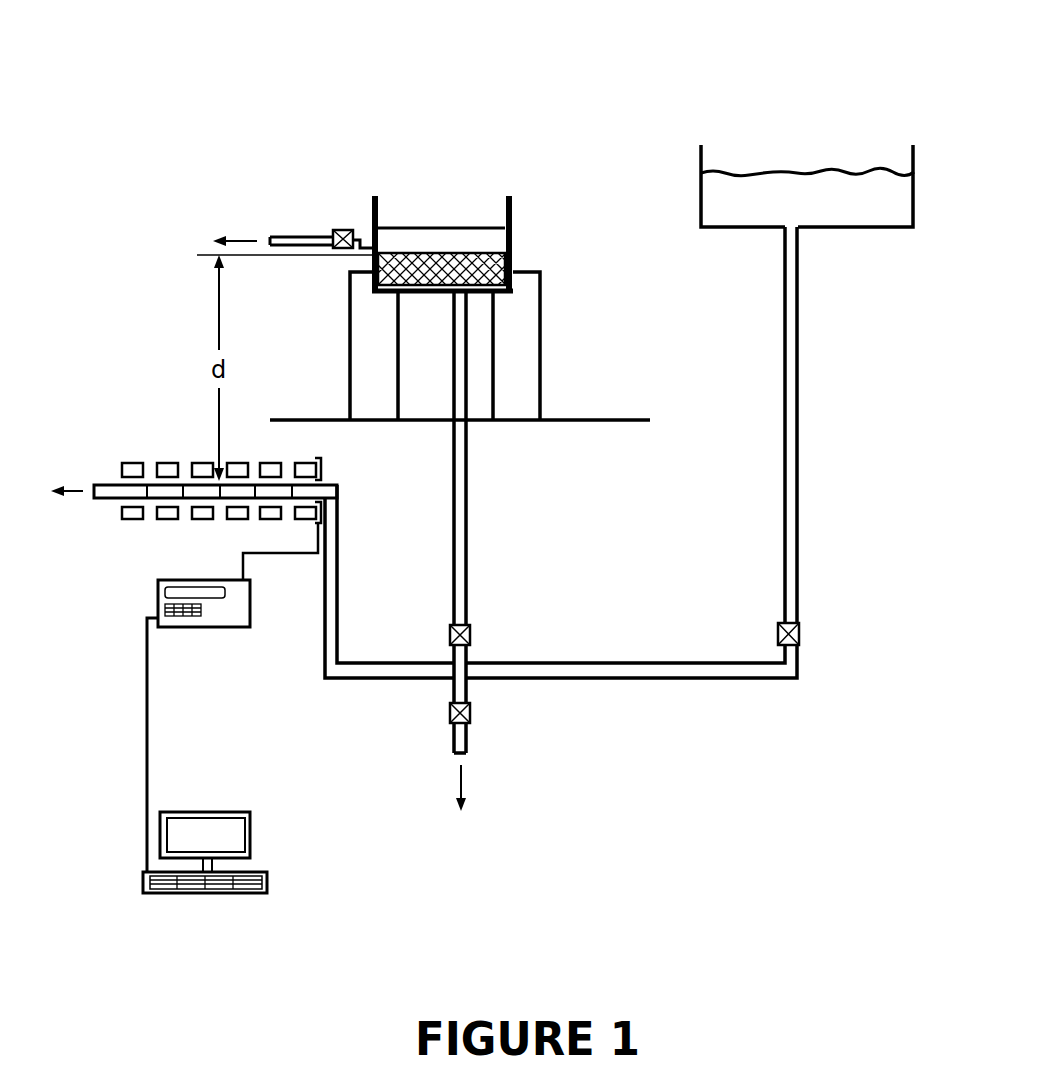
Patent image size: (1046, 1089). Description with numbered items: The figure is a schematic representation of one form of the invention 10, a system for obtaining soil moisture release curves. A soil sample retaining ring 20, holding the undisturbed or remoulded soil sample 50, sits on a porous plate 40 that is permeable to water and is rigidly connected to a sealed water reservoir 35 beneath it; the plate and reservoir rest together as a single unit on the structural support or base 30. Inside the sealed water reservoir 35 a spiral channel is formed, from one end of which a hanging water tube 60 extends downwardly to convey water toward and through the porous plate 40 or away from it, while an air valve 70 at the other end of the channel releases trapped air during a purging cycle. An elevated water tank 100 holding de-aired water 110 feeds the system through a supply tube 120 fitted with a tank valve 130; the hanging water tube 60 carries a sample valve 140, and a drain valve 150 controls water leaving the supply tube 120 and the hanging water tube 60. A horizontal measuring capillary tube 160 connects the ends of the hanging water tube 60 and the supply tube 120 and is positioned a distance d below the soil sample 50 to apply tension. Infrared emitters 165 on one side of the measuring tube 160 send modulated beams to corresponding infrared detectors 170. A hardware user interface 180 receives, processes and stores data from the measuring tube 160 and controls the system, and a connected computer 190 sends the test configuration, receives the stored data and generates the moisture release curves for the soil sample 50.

The system 10 is at (268, 88).
The soil sample retaining ring 20 is at (515, 200).
The structural support or base 30 is at (528, 333).
The sealed water reservoir 35 is at (497, 290).
The porous plate 40 is at (483, 253).
The soil sample 50 is at (447, 237).
The hanging water tube 60 is at (463, 520).
The air valve 70 is at (338, 227).
The water receptacle or tank 100 is at (701, 145).
The water 110 is at (779, 187).
The supply tube 120 is at (796, 482).
The tank valve 130 is at (798, 630).
The sample valve 140 is at (470, 637).
The drain valve 150 is at (470, 713).
The measuring capillary tube 160 is at (108, 490).
The infrared emitters 165 is at (323, 470).
The infrared detectors 170 is at (322, 512).
The hardware user interface 180 is at (157, 592).
The computer 190 is at (267, 878).